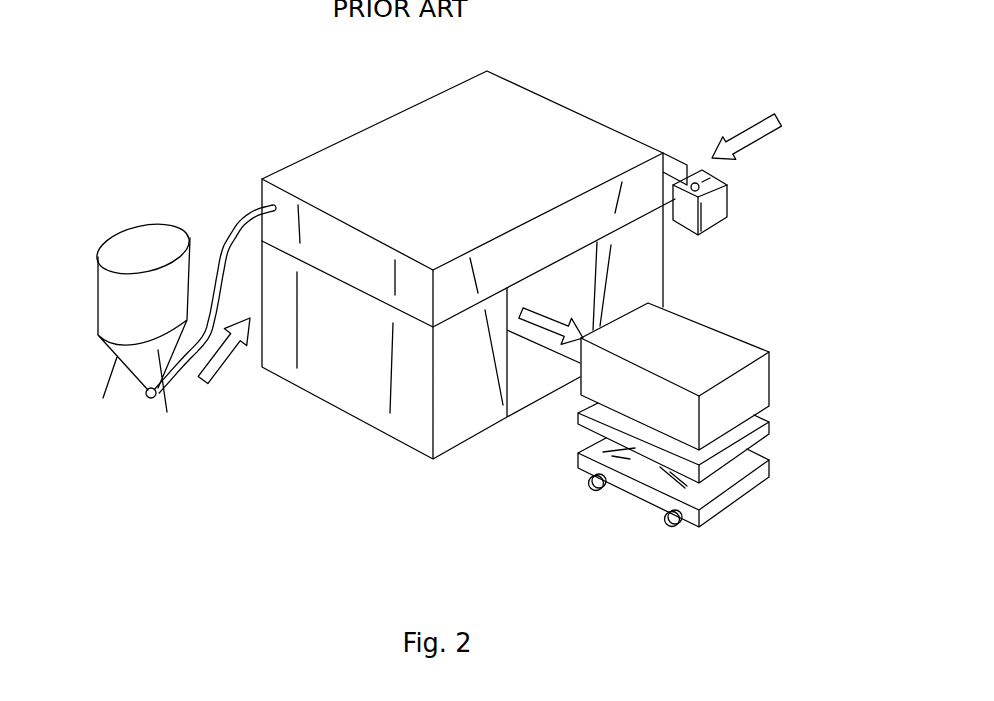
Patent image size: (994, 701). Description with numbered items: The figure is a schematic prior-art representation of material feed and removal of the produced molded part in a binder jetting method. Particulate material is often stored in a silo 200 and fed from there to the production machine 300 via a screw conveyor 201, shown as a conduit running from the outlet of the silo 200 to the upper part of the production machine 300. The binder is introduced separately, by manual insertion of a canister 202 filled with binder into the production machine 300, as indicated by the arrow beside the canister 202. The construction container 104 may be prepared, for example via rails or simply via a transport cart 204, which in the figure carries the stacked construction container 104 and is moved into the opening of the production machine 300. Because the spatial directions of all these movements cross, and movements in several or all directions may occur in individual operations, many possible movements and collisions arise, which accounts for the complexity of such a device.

The production machine 300 is at (325, 155).
The silo 200 is at (145, 338).
The screw conveyor 201 is at (233, 233).
The canister 202 is at (690, 162).
The construction container 104 is at (615, 405).
The transport cart 204 is at (648, 480).